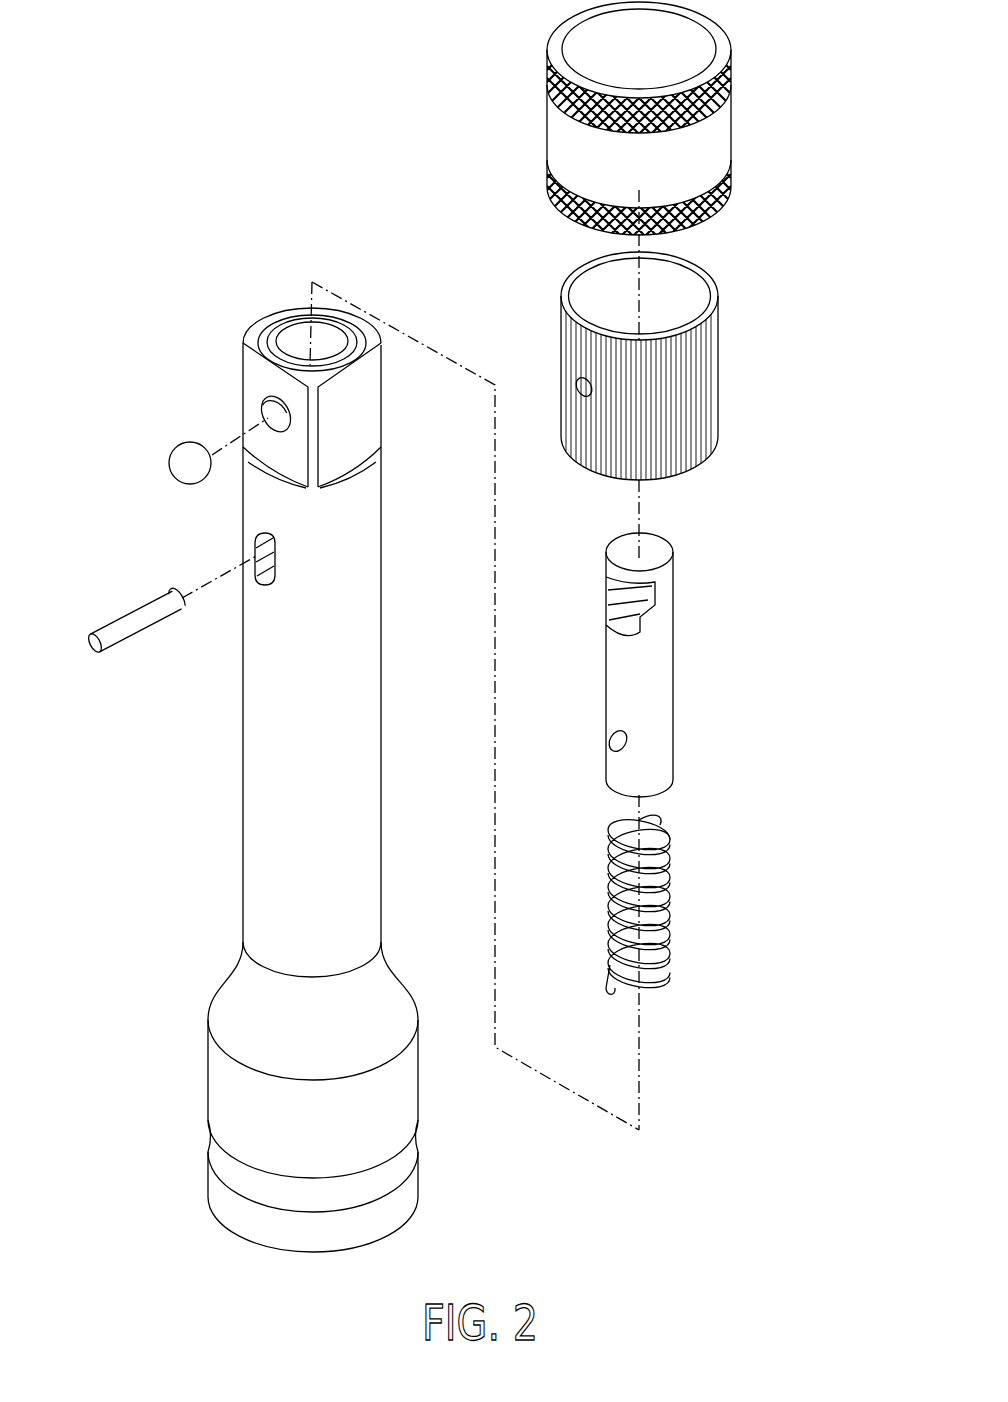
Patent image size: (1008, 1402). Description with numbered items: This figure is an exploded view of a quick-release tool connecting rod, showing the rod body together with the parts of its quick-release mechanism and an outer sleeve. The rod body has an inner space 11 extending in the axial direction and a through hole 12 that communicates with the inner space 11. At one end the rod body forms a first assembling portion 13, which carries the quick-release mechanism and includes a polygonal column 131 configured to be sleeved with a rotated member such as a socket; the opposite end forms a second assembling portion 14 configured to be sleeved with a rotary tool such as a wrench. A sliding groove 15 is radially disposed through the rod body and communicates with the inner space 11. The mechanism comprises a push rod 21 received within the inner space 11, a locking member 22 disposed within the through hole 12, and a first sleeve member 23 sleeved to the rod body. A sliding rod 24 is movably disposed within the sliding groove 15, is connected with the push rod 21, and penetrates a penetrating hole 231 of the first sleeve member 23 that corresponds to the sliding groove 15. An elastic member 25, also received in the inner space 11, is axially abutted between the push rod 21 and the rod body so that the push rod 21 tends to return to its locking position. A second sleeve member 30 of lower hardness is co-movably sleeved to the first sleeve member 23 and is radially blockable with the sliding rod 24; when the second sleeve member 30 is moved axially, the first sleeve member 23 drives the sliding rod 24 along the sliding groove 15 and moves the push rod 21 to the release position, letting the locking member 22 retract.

The inner space 11 is at (300, 318).
The through hole 12 is at (263, 400).
The first assembling portion 13 is at (247, 323).
The polygonal column 131 is at (262, 373).
The second assembling portion 14 is at (283, 1230).
The sliding groove 15 is at (263, 578).
The push rod 21 is at (666, 685).
The locking member 22 is at (168, 452).
The first sleeve member 23 is at (631, 359).
The penetrating hole 231 is at (580, 385).
The sliding rod 24 is at (137, 613).
The elastic member 25 is at (670, 883).
The second sleeve member 30 is at (732, 113).